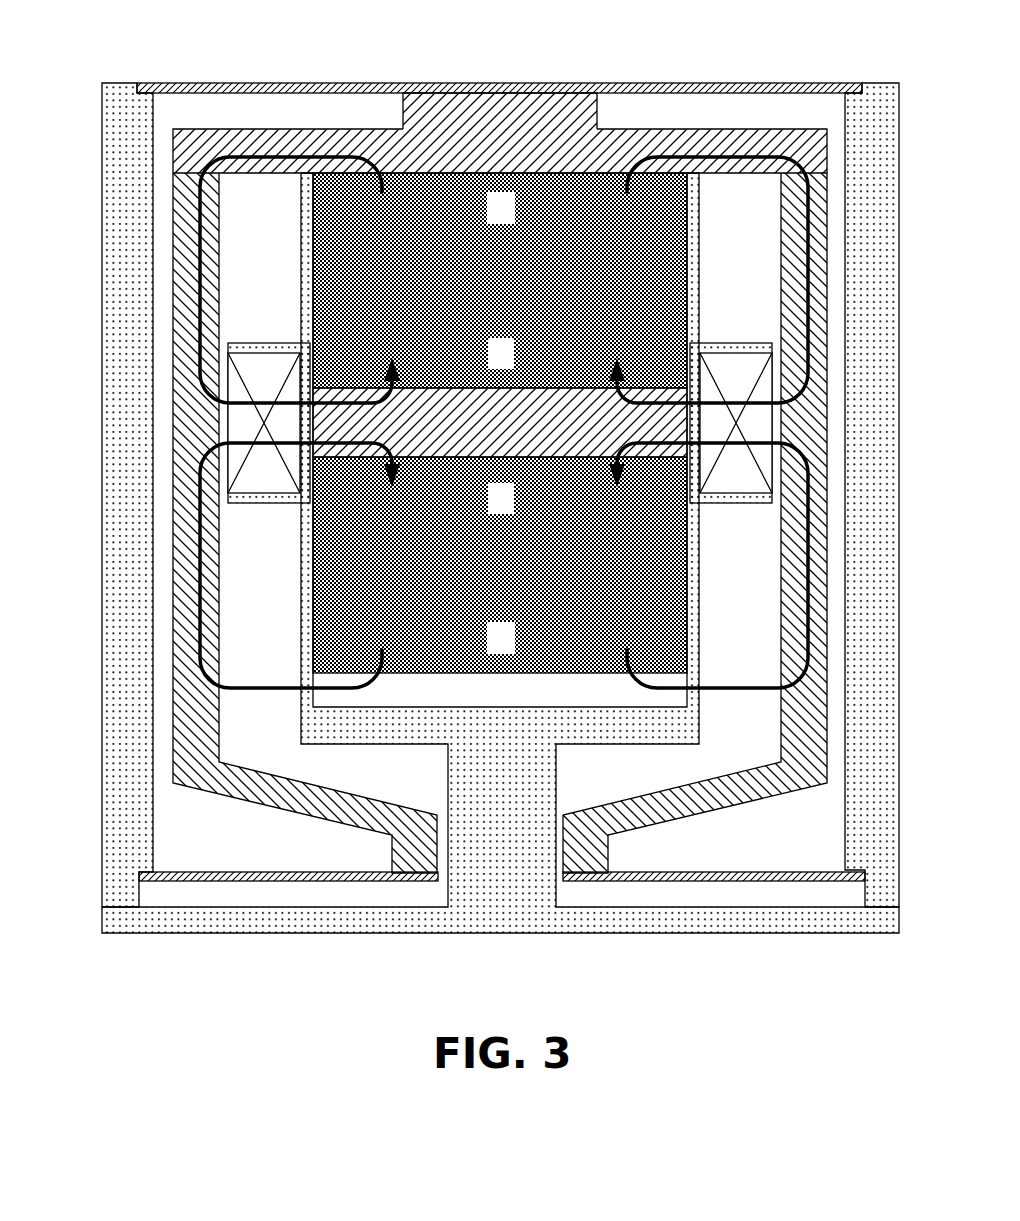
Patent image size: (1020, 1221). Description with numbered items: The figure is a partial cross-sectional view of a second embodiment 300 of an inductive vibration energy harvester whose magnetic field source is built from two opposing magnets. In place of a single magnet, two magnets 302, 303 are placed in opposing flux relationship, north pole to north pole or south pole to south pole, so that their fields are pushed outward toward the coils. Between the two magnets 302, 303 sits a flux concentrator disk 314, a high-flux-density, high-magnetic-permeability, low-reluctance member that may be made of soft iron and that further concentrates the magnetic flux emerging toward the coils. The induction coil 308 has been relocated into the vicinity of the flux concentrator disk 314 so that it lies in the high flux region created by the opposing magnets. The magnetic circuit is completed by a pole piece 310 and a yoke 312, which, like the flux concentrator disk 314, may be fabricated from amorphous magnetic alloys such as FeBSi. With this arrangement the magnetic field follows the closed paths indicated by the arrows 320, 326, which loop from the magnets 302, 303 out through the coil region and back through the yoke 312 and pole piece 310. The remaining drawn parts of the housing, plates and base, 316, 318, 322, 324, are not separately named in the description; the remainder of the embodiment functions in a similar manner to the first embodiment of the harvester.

The inductive vibration energy harvester 300 is at (204, 1021).
The magnet 302 is at (482, 290).
The magnet 303 is at (482, 580).
The induction coil 308 is at (245, 422).
The pole piece 310 is at (480, 100).
The yoke 312 is at (186, 441).
The flux concentrator disk 314 is at (482, 435).
The housing 316 is at (134, 156).
The top plate 318 is at (281, 83).
The arrows 320 is at (190, 335).
The bottom plate 322 is at (317, 870).
The base 324 is at (610, 933).
The arrows 326 is at (195, 583).